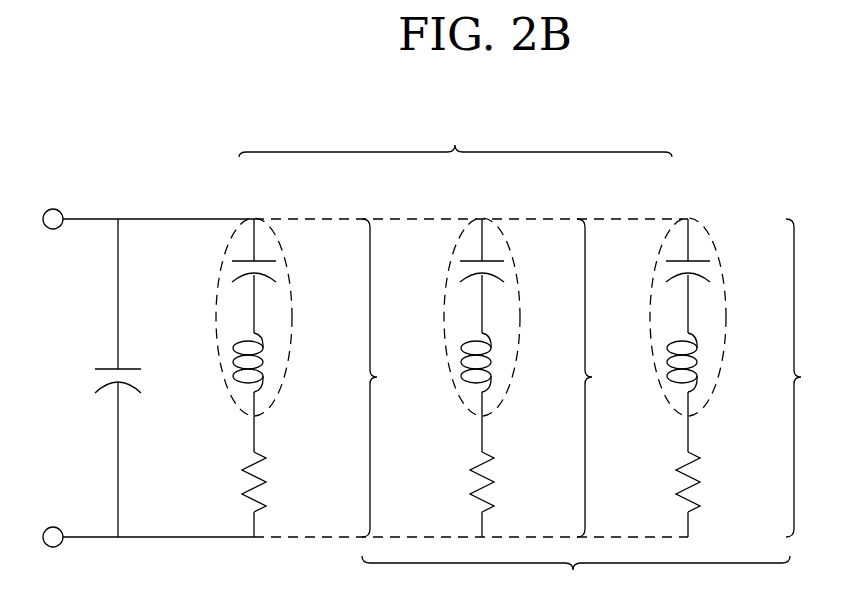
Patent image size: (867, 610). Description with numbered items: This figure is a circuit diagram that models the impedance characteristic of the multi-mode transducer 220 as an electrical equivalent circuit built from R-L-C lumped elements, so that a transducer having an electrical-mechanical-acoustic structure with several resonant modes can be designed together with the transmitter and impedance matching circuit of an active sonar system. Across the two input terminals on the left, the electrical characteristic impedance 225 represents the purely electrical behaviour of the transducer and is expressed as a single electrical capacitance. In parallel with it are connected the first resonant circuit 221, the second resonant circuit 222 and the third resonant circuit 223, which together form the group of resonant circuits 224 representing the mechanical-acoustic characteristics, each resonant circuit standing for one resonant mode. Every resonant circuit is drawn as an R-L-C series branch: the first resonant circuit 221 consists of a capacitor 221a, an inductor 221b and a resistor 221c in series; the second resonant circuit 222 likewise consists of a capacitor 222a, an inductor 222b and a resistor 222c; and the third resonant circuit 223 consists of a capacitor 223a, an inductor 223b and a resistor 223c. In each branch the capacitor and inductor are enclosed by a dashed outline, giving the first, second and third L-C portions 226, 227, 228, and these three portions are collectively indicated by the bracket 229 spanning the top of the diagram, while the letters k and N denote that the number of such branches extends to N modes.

The multi-mode transducer 220 is at (808, 320).
The first resonant circuit 221 is at (312, 352).
The first capacitor C1 221a is at (295, 276).
The first inductor L1 221b is at (295, 392).
The first resistor R1 221c is at (300, 494).
The second resonant circuit 222 is at (534, 352).
The k-th capacitor Ck 222a is at (518, 276).
The k-th inductor Lk 222b is at (518, 392).
The k-th resistor Rk 222c is at (523, 494).
The third resonant circuit 223 is at (741, 352).
The N-th capacitor CN 223a is at (724, 276).
The N-th inductor LN 223b is at (724, 392).
The N-th resistor RN 223c is at (729, 494).
The plurality of resonance circuits 224 is at (576, 578).
The electrical characteristic impedance 225 is at (145, 378).
The first resonator LC portion 226 is at (237, 219).
The k-th resonator LC portion 227 is at (465, 219).
The N-th resonator LC portion 228 is at (670, 219).
The group of resonator LC portions 229 is at (455, 139).